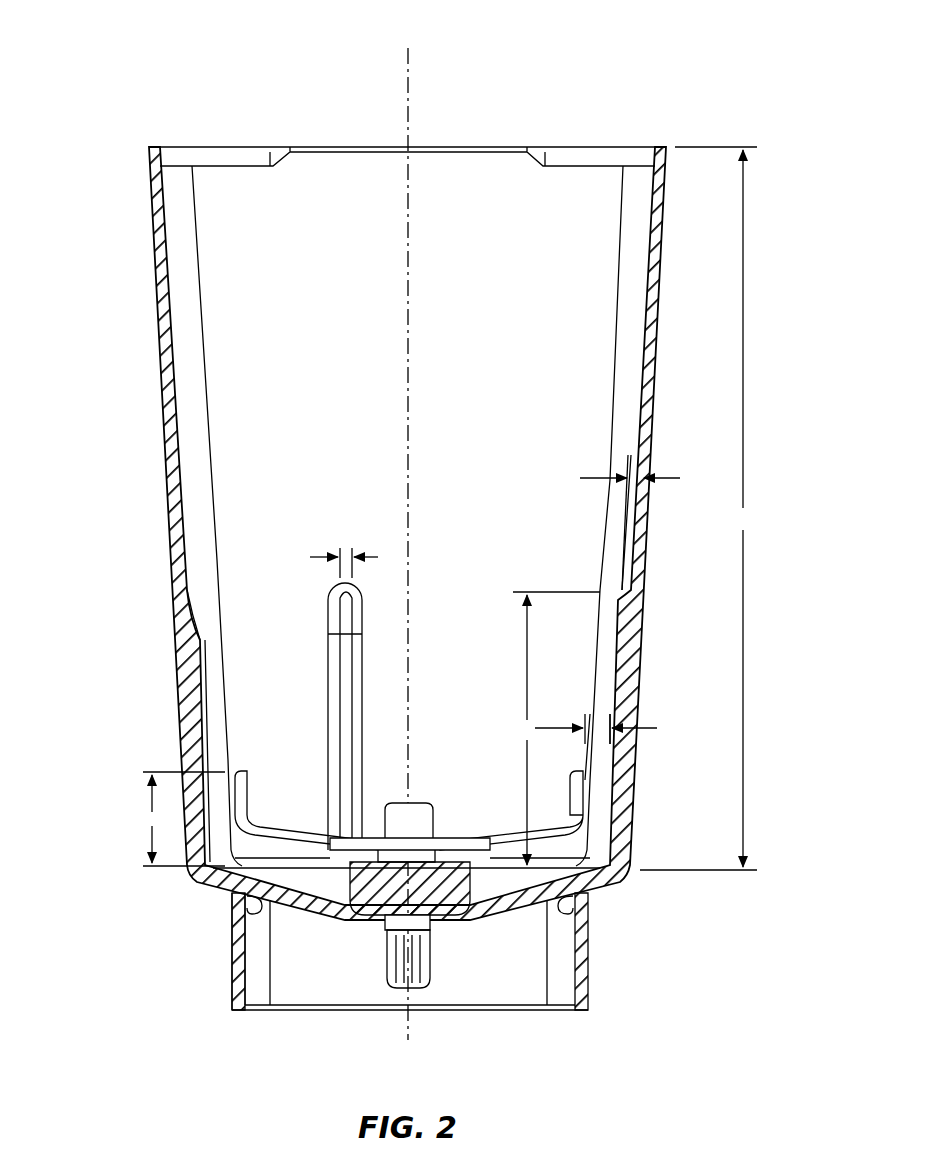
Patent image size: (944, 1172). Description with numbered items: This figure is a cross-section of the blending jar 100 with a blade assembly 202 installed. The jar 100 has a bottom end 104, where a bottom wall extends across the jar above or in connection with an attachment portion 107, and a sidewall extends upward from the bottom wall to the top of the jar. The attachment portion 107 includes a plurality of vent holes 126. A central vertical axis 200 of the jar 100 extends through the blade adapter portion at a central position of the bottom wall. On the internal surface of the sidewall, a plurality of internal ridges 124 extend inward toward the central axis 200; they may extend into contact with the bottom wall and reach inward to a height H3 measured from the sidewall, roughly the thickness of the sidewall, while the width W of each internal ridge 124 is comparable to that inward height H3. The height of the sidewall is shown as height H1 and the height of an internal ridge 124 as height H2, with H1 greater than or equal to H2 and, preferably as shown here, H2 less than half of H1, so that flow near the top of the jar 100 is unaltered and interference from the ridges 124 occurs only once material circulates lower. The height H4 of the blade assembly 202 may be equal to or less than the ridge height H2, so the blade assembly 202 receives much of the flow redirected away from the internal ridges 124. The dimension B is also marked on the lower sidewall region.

The blending jar 100 is at (88, 110).
The central vertical axis 200 is at (410, 78).
The internal ridges 124 is at (345, 687).
The blade assembly 202 is at (296, 840).
The vent holes 126 is at (256, 912).
The attachment portion 107 is at (232, 960).
The bottom end 104 is at (598, 962).
The height of the sidewall H1 is at (745, 505).
The height of an internal ridge H2 is at (535, 735).
The height of the internal ridges from the sidewall H3 is at (590, 478).
The height of the blade assembly H4 is at (150, 822).
The width of the internal ridges W is at (350, 548).
The lower wall thickness B is at (640, 733).